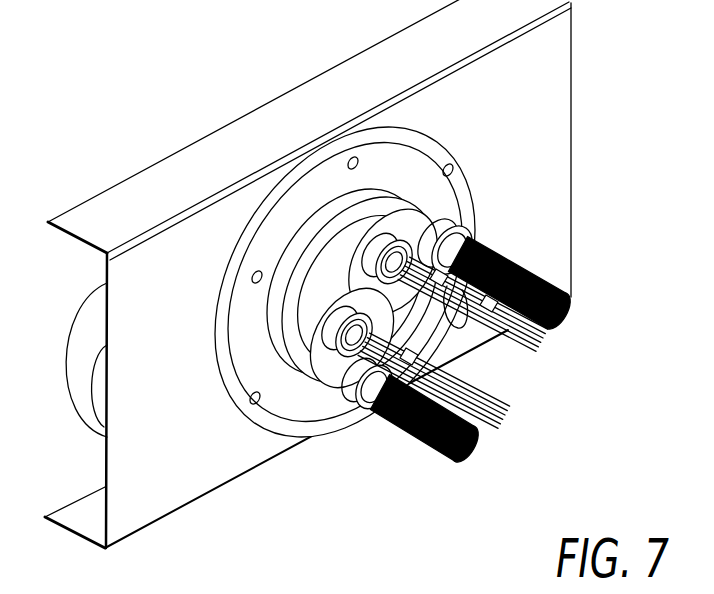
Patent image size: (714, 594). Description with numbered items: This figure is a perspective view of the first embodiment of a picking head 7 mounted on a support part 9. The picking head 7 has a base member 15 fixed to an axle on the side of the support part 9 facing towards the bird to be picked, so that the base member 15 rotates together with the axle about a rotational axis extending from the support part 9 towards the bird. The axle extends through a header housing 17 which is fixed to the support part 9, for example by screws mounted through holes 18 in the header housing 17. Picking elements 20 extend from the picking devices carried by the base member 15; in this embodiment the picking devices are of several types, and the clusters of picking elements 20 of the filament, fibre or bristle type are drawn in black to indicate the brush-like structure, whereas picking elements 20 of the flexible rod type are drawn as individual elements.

The picking head 7 is at (348, 306).
The support part 9 is at (148, 502).
The base member 15 is at (343, 281).
The header housing 17 is at (270, 343).
The holes 18 is at (453, 163).
The picking elements 20 is at (545, 343).